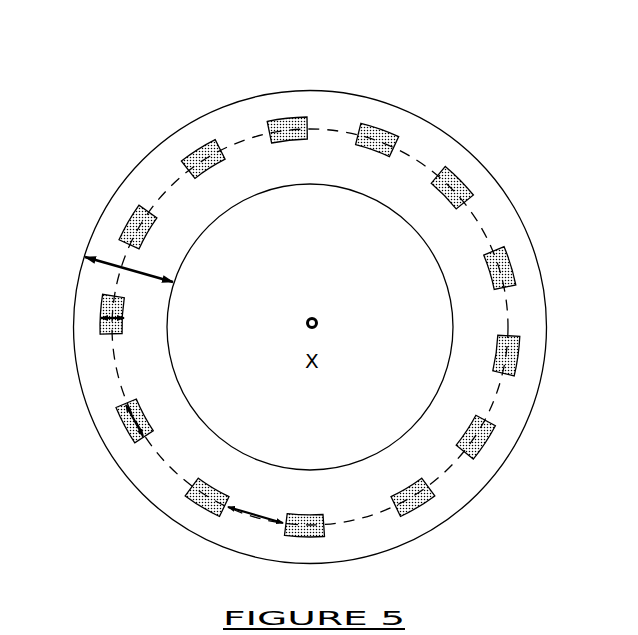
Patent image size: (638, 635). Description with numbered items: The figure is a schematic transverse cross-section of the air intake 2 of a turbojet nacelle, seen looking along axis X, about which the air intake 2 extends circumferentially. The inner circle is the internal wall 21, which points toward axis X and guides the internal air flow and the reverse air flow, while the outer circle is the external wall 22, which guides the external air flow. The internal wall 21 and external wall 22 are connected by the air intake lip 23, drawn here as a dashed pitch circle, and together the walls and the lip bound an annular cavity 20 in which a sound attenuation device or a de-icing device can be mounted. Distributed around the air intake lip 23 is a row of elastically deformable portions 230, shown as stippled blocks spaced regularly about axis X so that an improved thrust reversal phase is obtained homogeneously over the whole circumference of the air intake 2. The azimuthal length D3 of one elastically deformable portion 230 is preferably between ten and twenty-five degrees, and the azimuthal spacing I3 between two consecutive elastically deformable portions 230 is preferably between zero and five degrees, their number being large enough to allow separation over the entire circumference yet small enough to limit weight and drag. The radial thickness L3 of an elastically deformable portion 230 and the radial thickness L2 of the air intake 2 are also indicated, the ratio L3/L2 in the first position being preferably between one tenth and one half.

The air intake 2 is at (342, 79).
The annular cavity 20 is at (380, 114).
The internal wall 21 is at (452, 343).
The external wall 22 is at (437, 127).
The air intake lip 23 is at (488, 225).
The elastically deformable portion 230 is at (288, 118).
The radial thickness of the air intake L2 is at (118, 262).
The radial thickness of an elastically deformable portion L3 is at (112, 307).
The azimuthal length of an elastically deformable portion D3 is at (138, 418).
The azimuthal spacing between two consecutive elastically deformable portions I3 is at (233, 506).